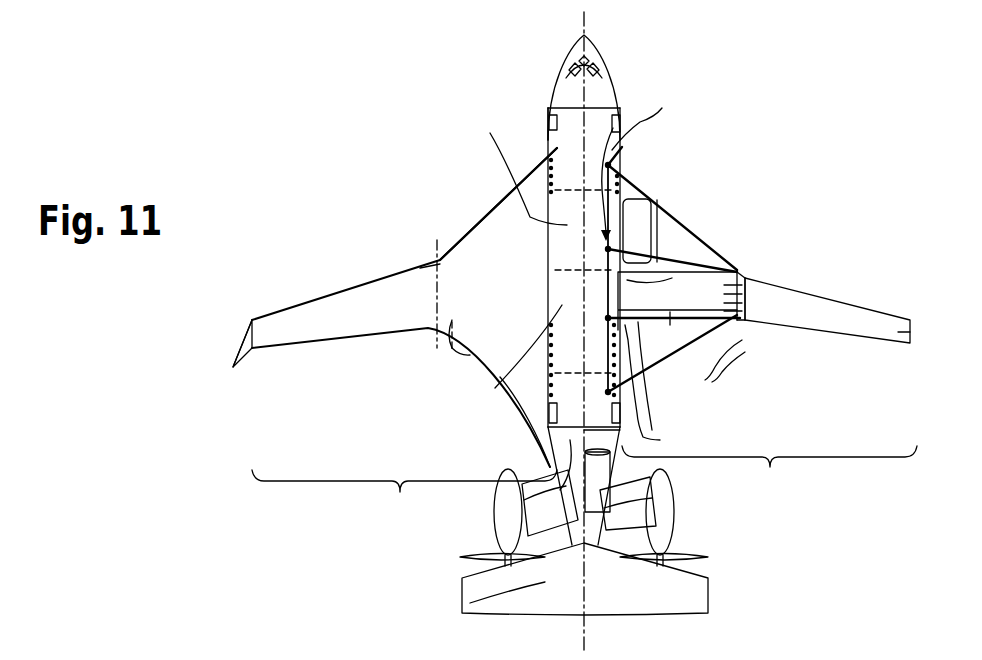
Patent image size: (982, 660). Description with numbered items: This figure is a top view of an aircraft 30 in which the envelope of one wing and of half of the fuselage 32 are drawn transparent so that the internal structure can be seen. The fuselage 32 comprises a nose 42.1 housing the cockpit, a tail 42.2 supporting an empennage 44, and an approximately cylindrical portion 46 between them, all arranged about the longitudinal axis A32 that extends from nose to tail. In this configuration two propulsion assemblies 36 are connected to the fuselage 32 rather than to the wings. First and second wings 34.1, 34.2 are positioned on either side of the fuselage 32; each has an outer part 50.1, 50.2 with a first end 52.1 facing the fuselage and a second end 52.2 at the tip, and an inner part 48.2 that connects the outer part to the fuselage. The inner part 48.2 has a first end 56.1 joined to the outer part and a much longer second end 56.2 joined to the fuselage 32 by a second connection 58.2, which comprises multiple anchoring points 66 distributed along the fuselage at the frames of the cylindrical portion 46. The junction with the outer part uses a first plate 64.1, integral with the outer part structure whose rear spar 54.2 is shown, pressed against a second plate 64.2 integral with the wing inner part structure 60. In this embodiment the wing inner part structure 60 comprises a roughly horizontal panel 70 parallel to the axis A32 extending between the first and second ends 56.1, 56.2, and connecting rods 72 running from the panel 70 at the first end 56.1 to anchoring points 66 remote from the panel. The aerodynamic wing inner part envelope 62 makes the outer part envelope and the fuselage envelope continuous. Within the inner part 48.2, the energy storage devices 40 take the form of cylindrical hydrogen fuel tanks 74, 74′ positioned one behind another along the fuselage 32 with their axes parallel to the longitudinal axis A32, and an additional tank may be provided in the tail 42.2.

The aircraft 30 is at (338, 510).
The fuselage 32 is at (535, 412).
The first wing 34.1 is at (769, 470).
The second wing 34.2 is at (404, 493).
The propulsion assembly 36 is at (485, 523).
The energy storage device 40 is at (659, 258).
The nose 42.1 is at (566, 90).
The tail 42.2 is at (522, 490).
The empennage 44 is at (510, 592).
The cylindrical portion 46 is at (557, 150).
The inner part 48.2 is at (472, 226).
The outer part 50.1 is at (845, 306).
The outer part 50.2 is at (303, 296).
The first end 52.1 is at (420, 270).
The second end 52.2 is at (258, 318).
The rear spar 54.2 is at (742, 255).
The first end 56.1 is at (452, 346).
The second end 56.2 is at (522, 425).
The second connection 58.2 is at (662, 108).
The wing inner part structure 60 is at (672, 340).
The aerodynamic wing inner part envelope 62 is at (470, 355).
The first plate 64.1 is at (760, 293).
The second plate 64.2 is at (747, 270).
The anchoring point 66 is at (645, 245).
The panel 70 is at (740, 268).
The connecting rod 72 is at (681, 255).
The fuel tank 74 is at (716, 244).
The fuel tank 74′ is at (666, 392).
The longitudinal axis A32 is at (584, 22).